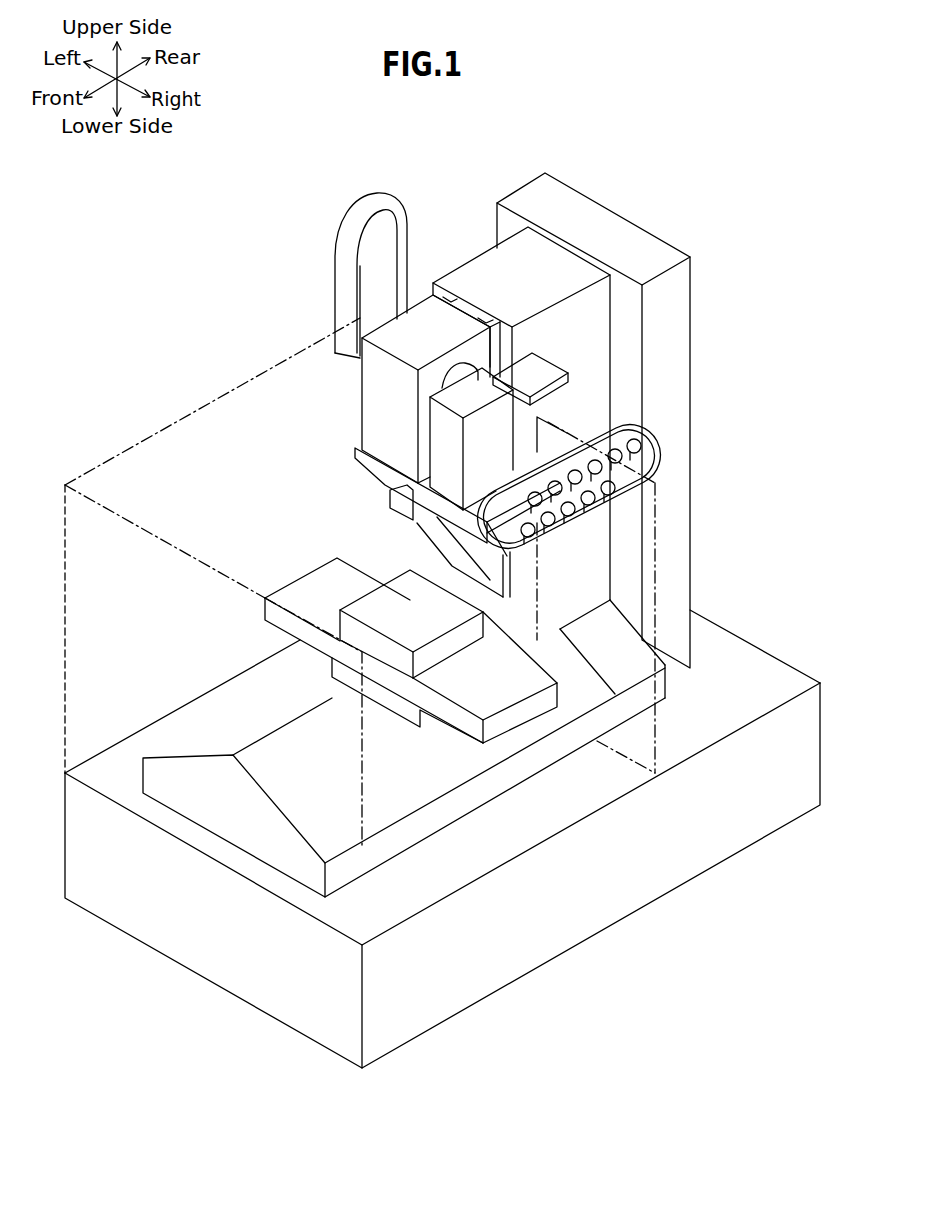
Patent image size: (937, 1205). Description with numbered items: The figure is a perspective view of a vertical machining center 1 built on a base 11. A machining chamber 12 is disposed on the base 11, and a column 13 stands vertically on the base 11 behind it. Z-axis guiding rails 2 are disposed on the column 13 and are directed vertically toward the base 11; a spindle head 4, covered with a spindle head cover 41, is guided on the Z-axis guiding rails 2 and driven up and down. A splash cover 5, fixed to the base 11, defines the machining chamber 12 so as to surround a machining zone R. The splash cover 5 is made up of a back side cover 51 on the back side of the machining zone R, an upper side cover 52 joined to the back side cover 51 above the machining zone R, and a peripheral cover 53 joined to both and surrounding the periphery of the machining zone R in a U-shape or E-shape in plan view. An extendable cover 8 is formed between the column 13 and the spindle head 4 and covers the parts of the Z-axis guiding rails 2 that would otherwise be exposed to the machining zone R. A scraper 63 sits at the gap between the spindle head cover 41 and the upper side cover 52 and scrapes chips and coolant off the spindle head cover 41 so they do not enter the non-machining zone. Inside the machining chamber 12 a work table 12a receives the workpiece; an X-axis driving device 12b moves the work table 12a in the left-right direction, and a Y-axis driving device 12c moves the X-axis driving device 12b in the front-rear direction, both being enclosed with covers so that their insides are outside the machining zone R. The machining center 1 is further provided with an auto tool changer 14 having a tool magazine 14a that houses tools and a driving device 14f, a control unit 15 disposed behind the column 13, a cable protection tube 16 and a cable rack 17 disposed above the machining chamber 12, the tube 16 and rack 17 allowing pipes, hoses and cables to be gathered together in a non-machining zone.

The vertical machining center 1 is at (639, 159).
The Z-axis guiding rails 2 is at (413, 533).
The spindle head 4 is at (321, 428).
The splash cover 5 is at (65, 565).
The extendable cover 8 is at (500, 557).
The base 11 is at (580, 920).
The machining chamber 12 is at (209, 384).
The work table 12a is at (408, 637).
The X-axis driving device 12b is at (313, 584).
The Y-axis driving device 12c is at (385, 793).
The column 13 is at (618, 373).
The auto tool changer 14 is at (669, 442).
The tool magazine 14a is at (652, 462).
The driving device 14f is at (495, 430).
The control unit 15 is at (538, 196).
The cable protection tube 16 is at (366, 197).
The cable rack 17 is at (547, 355).
The spindle head cover 41 is at (357, 460).
The back side cover 51 is at (655, 530).
The upper side cover 52 is at (320, 414).
The peripheral cover 53 is at (61, 501).
The scraper 63 is at (370, 477).
The machining zone R is at (222, 652).